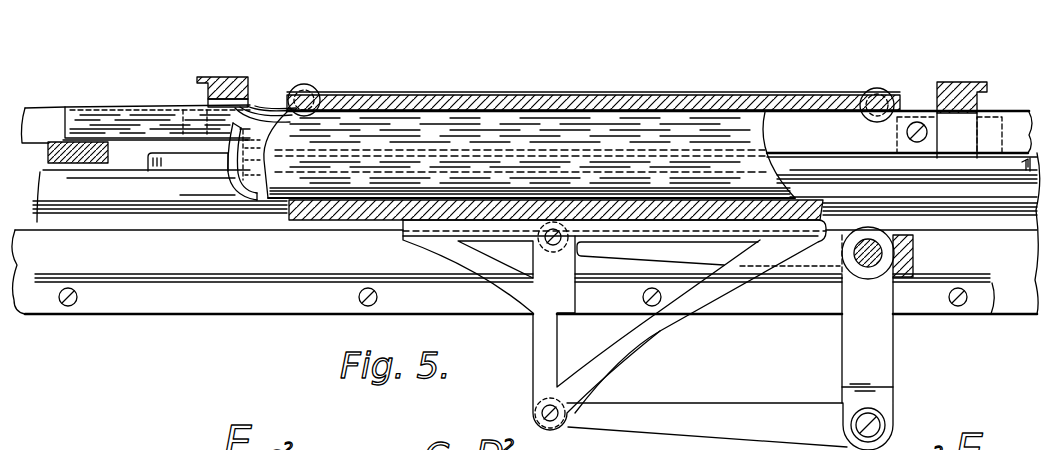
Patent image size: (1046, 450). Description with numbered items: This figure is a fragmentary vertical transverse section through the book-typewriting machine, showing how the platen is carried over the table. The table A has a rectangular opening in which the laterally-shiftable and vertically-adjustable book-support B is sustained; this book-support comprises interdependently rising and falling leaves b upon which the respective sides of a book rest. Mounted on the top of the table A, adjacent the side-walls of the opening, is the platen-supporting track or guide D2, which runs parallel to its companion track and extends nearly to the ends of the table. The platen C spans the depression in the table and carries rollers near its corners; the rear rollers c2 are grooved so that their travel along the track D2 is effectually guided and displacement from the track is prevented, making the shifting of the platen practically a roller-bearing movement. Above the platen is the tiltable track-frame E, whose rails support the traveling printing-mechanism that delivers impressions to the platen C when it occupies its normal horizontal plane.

The table A is at (73, 223).
The book-support B is at (658, 335).
The platen C is at (297, 89).
The platen-supporting track D2 is at (823, 130).
The track-frame E is at (237, 77).
The rear roller c2 is at (304, 85).
The leaf b is at (373, 212).